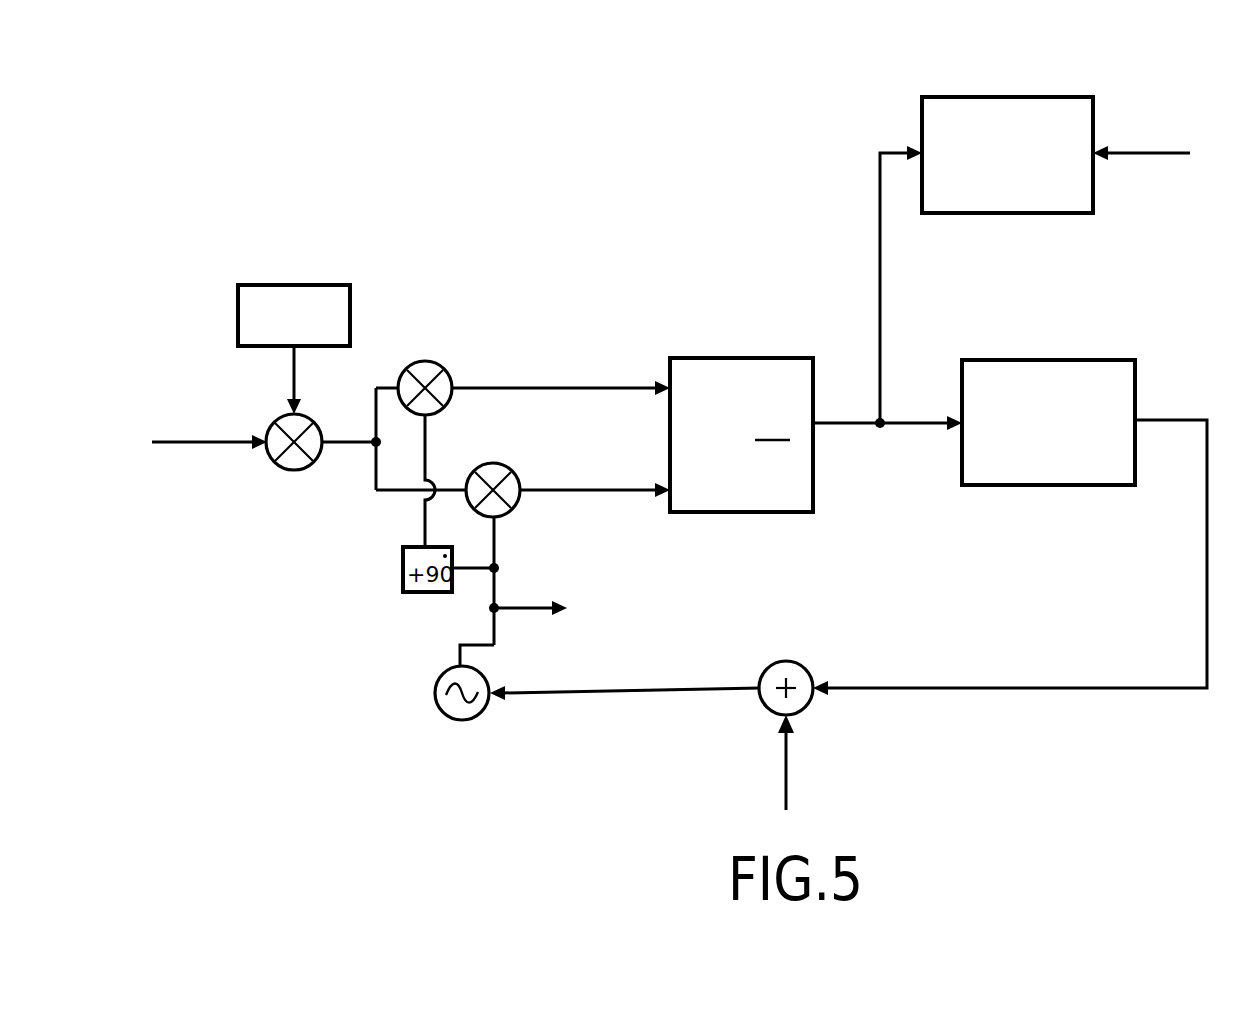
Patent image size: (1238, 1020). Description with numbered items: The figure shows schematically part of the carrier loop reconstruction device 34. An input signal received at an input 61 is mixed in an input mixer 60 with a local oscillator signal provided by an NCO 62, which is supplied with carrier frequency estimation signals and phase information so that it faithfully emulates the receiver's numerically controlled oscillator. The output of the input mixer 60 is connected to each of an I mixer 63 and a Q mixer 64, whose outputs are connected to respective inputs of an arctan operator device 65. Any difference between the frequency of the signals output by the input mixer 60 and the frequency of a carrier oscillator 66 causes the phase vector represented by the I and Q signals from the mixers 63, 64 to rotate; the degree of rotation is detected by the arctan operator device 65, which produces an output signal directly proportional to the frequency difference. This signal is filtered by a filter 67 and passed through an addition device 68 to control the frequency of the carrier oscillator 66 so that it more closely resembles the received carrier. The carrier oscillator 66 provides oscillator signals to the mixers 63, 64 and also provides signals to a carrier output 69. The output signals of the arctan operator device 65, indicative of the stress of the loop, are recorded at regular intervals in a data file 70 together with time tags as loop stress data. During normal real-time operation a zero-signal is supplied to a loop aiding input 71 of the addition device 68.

The carrier loop reconstruction device 34 is at (312, 812).
The input mixer 60 is at (292, 472).
The input 61 is at (190, 440).
The NCO 62 is at (348, 285).
The I mixer 63 is at (437, 363).
The Q mixer 64 is at (510, 512).
The arctan operator device 65 is at (775, 358).
The carrier oscillator 66 is at (468, 722).
The filter 67 is at (1076, 360).
The addition device 68 is at (805, 662).
The carrier output 69 is at (556, 614).
The data file 70 is at (1045, 97).
The loop aiding input 71 is at (790, 762).